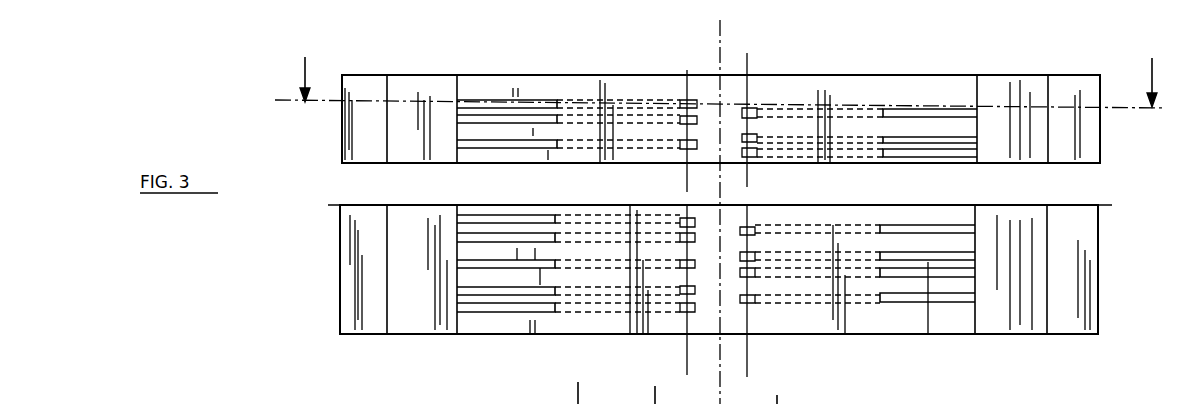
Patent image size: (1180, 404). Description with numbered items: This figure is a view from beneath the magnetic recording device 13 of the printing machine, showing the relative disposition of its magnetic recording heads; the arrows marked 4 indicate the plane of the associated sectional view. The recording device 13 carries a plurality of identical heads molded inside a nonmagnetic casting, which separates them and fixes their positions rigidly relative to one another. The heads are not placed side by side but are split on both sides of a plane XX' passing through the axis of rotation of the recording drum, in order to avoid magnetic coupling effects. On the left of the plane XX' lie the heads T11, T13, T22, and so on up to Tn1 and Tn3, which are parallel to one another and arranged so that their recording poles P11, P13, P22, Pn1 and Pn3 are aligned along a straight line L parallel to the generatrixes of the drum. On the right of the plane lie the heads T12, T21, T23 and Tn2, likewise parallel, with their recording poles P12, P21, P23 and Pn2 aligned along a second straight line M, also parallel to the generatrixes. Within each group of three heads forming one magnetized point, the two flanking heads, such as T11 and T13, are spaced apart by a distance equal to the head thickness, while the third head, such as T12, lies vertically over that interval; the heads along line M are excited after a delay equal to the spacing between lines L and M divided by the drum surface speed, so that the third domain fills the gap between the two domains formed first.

The section line IV-IV 4 is at (727, 81).
The recording device 13 is at (1104, 288).
The recording head T11 is at (570, 104).
The recording head T13 is at (594, 112).
The recording head T22 is at (596, 142).
The recording head T12 is at (847, 108).
The recording head T21 is at (862, 150).
The recording head T23 is at (875, 152).
The recording head Tn1 is at (565, 290).
The recording head Tn3 is at (603, 303).
The recording head Tn2 is at (822, 303).
The recording pole P11 is at (682, 102).
The recording pole P13 is at (698, 118).
The recording pole P22 is at (688, 150).
The recording pole P12 is at (752, 107).
The recording pole P21 is at (742, 138).
The recording pole P23 is at (756, 157).
The recording pole Pn1 is at (678, 292).
The recording pole Pn3 is at (680, 308).
The recording pole Pn2 is at (755, 302).